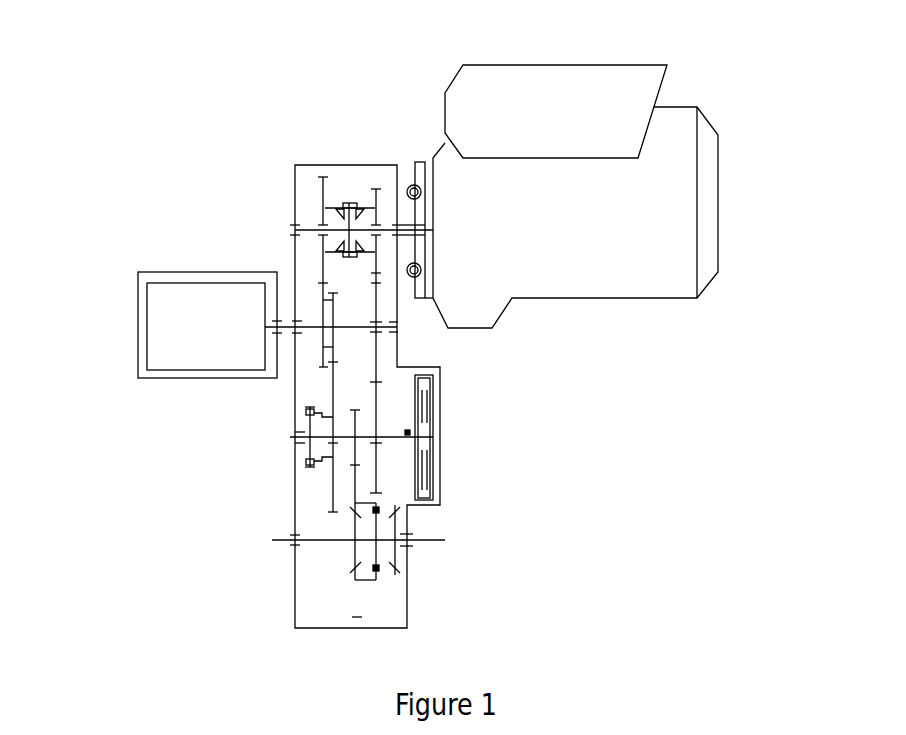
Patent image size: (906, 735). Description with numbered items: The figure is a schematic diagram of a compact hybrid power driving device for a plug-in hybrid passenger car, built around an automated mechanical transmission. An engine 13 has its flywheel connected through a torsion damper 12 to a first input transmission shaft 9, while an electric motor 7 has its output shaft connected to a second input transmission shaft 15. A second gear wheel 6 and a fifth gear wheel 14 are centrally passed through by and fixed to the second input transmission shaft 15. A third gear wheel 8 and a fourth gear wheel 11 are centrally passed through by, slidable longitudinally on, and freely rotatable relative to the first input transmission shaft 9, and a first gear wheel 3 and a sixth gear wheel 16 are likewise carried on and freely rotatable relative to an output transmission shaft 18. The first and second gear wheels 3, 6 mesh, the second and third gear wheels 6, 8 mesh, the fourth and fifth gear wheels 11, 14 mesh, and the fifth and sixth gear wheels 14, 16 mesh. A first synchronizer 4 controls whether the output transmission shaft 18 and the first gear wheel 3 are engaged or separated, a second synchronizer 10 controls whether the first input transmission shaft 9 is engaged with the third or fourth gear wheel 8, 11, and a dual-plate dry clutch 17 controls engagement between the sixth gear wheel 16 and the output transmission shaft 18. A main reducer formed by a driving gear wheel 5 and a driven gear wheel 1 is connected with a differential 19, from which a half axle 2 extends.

The driven gear wheel of main reducer 1 is at (357, 617).
The half axle 2 is at (272, 540).
The first gear wheel 3 is at (333, 490).
The first synchronizer 4 is at (330, 457).
The driving gear wheel of main reducer 5 is at (357, 422).
The second gear wheel 6 is at (323, 368).
The electric motor 7 is at (193, 325).
The third gear wheel 8 is at (323, 270).
The first input transmission shaft 9 is at (315, 230).
The second synchronizer 10 is at (340, 205).
The fourth gear wheel 11 is at (372, 188).
The torsion damper 12 is at (412, 186).
The engine 13 is at (622, 207).
The fifth gear wheel 14 is at (373, 287).
The second input transmission shaft 15 is at (357, 327).
The sixth gear wheel 16 is at (375, 398).
The dual-plate dry clutch 17 is at (408, 432).
The output transmission shaft 18 is at (380, 440).
The differential 19 is at (393, 572).